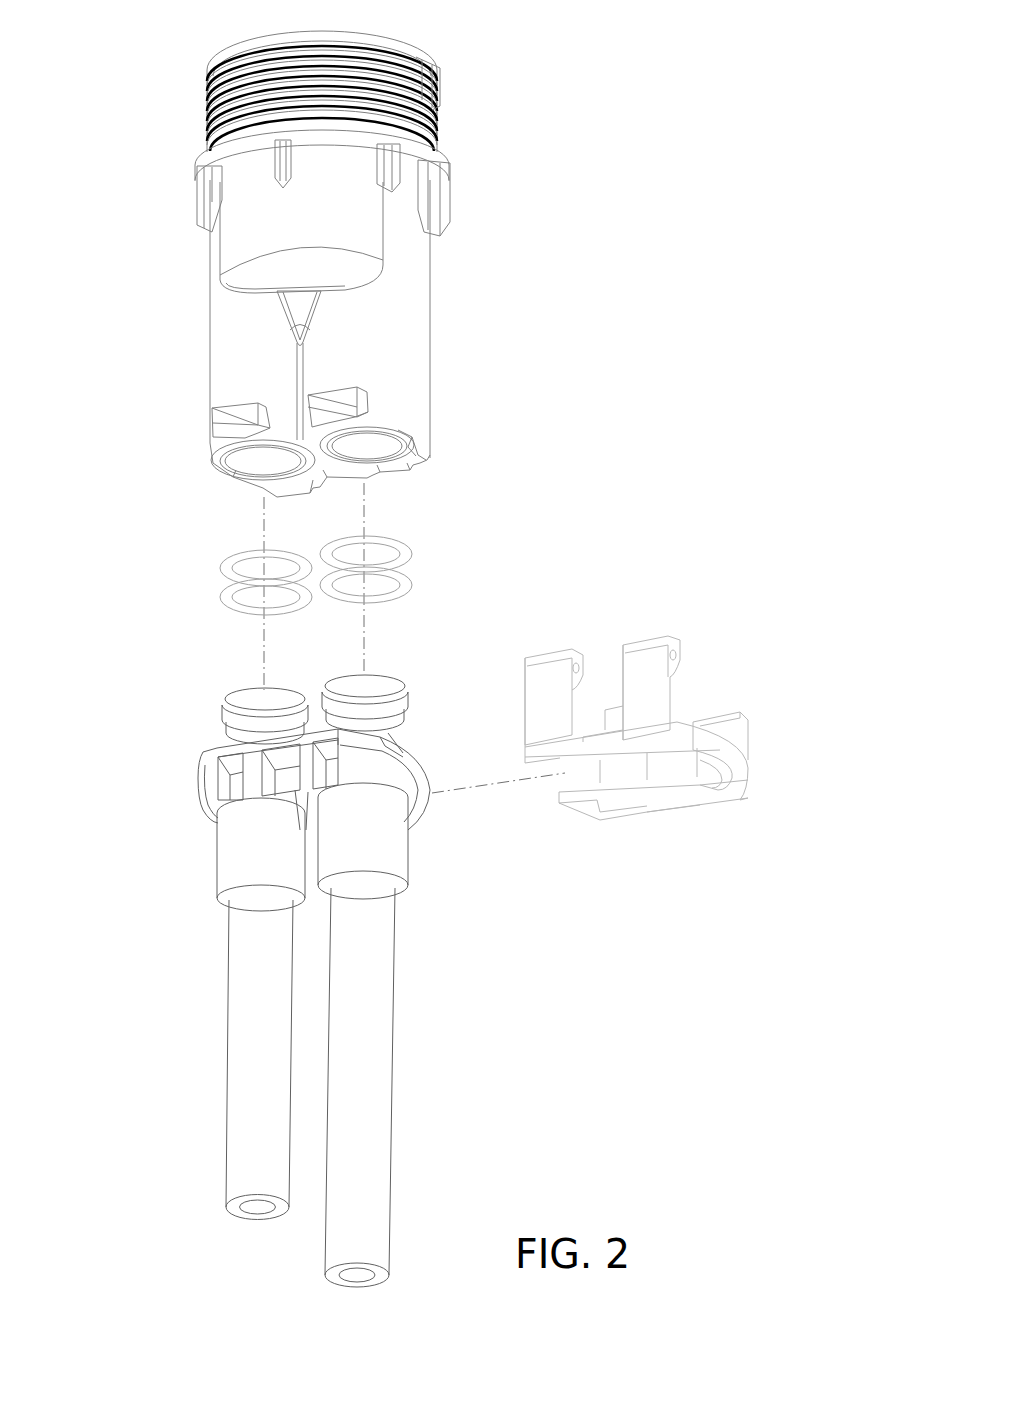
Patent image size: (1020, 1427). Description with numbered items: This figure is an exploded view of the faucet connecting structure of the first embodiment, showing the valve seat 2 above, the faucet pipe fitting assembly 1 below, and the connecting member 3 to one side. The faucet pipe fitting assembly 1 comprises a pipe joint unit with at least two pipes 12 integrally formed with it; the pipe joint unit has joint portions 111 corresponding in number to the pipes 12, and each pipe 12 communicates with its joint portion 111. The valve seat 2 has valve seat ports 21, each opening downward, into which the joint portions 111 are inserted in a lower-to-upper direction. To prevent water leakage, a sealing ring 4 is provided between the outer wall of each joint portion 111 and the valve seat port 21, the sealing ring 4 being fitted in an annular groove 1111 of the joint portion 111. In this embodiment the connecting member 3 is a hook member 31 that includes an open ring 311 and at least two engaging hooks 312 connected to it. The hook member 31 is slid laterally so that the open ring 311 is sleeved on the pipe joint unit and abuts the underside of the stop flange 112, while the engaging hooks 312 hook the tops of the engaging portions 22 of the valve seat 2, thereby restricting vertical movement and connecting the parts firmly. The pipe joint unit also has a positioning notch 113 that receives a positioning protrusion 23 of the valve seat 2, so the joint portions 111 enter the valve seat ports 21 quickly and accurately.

The faucet pipe fitting assembly 1 is at (306, 953).
The joint portions 111 is at (232, 808).
The annular groove 1111 is at (243, 698).
The stop flange 112 is at (222, 735).
The positioning notch 113 is at (400, 757).
The pipes 12 is at (247, 955).
The valve seat 2 is at (331, 264).
The valve seat ports 21 is at (255, 463).
The engaging portions 22 is at (233, 418).
The positioning protrusion 23 is at (405, 452).
The connecting member 3 is at (653, 767).
The hook member 31 is at (653, 682).
The open ring 311 is at (695, 728).
The engaging hooks 312 is at (550, 673).
The sealing ring 4 is at (243, 560).